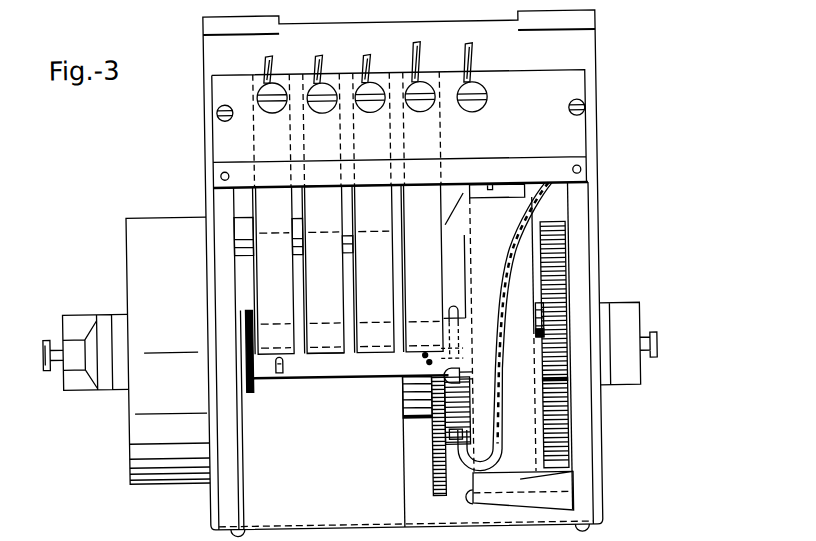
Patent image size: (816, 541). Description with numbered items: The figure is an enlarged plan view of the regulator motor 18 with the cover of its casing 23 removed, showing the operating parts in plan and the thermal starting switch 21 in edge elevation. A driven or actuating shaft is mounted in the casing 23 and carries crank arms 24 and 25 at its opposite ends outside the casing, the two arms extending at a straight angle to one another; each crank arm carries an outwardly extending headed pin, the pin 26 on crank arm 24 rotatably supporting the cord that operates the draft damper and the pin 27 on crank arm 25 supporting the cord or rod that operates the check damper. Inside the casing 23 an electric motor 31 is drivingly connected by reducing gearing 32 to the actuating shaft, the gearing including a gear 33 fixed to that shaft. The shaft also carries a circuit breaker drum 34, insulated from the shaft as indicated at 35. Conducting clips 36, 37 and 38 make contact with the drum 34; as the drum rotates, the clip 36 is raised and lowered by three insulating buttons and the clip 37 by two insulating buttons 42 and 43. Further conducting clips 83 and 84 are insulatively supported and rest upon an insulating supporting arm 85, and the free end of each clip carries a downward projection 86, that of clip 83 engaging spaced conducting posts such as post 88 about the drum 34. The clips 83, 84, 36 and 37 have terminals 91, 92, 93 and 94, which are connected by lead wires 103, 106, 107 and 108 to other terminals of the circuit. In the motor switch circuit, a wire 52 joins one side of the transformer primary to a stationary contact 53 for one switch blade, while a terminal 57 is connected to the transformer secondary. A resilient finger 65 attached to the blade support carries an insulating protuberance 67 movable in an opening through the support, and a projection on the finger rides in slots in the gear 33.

The regulator motor 18 is at (612, 164).
The thermal starting switch 21 is at (517, 482).
The casing 23 is at (212, 160).
The crank arm 24 is at (632, 322).
The crank arm 25 is at (73, 381).
The headed pin 26 is at (657, 349).
The headed pin 27 is at (48, 363).
The electric motor 31 is at (393, 512).
The reducing gearing 32 is at (421, 444).
The gear 33 is at (554, 253).
The circuit breaker drum 34 is at (307, 372).
The insulation 35 is at (247, 393).
The conducting clip 36 is at (375, 269).
The conducting clip 37 is at (424, 268).
The conducting clip 38 is at (458, 223).
The insulating button 42 is at (422, 357).
The insulating button 43 is at (426, 364).
The wire 52 is at (498, 427).
The stationary contact 53 is at (446, 438).
The terminal 57 is at (482, 90).
The resilient finger 65 is at (535, 222).
The insulating protuberance 67 is at (548, 315).
The conducting clip 83 is at (275, 271).
The conducting clip 84 is at (325, 270).
The insulating supporting arm 85 is at (243, 238).
The downward projection 86 is at (324, 354).
The conducting post 88 is at (273, 373).
The terminal 91 is at (265, 90).
The terminal 92 is at (317, 87).
The terminal 93 is at (365, 86).
The terminal 94 is at (419, 86).
The lead wire 103 is at (270, 60).
The lead wire 106 is at (323, 56).
The lead wire 107 is at (372, 56).
The lead wire 108 is at (420, 52).